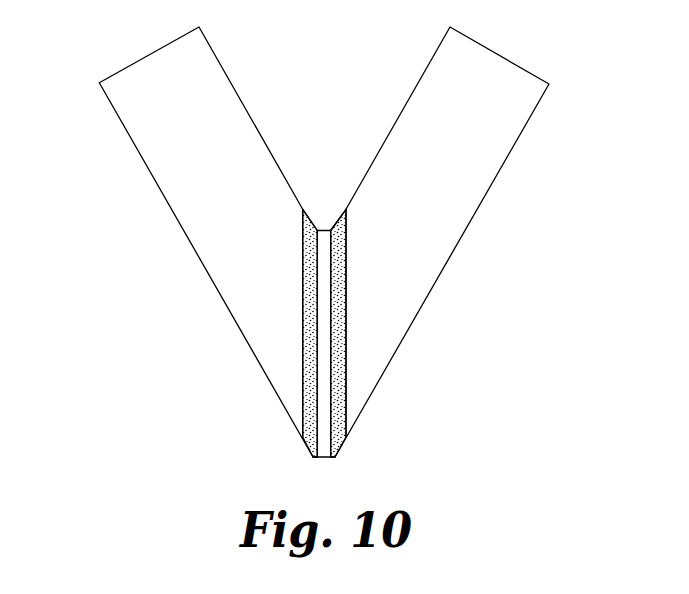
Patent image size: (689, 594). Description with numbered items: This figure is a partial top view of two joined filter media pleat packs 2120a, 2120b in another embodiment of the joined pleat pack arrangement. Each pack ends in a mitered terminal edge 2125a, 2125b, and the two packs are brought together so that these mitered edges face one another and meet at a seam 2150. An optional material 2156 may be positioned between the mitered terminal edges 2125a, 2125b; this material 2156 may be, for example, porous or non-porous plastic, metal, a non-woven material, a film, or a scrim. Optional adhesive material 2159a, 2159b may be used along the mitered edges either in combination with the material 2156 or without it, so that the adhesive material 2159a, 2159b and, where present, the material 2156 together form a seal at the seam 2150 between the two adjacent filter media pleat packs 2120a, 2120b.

The filter media pleat pack 2120a is at (145, 143).
The filter media pleat pack 2120b is at (496, 149).
The mitered terminal edge 2125a is at (309, 370).
The mitered terminal edge 2125b is at (341, 339).
The adhesive material 2159a is at (306, 400).
The adhesive material 2159b is at (344, 380).
The material 2156 is at (324, 243).
The seam 2150 is at (322, 457).